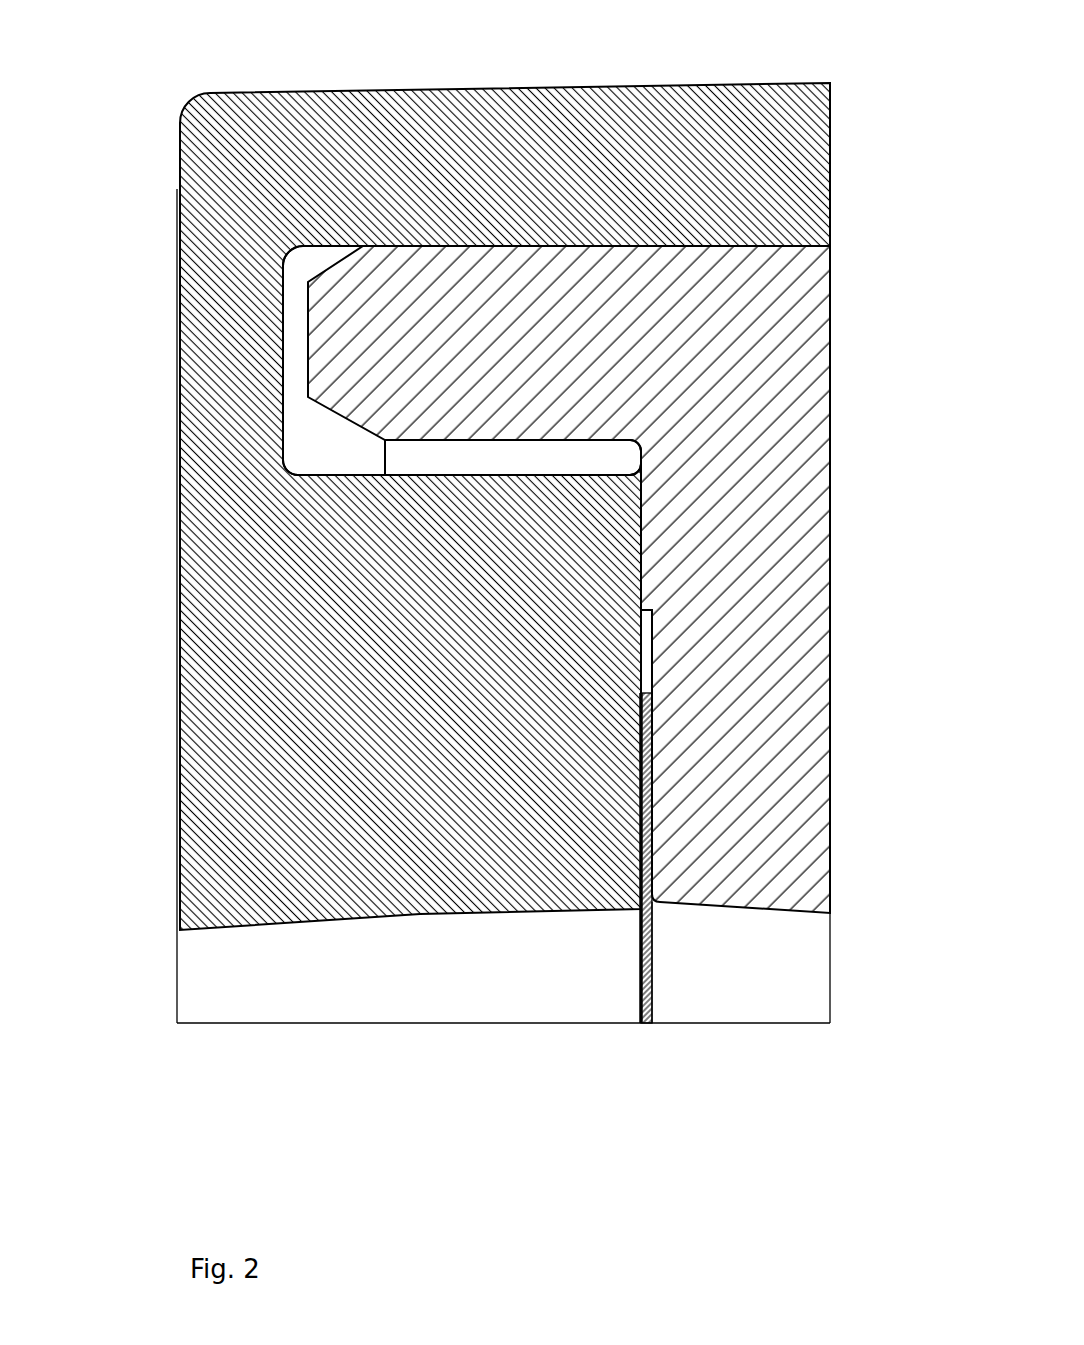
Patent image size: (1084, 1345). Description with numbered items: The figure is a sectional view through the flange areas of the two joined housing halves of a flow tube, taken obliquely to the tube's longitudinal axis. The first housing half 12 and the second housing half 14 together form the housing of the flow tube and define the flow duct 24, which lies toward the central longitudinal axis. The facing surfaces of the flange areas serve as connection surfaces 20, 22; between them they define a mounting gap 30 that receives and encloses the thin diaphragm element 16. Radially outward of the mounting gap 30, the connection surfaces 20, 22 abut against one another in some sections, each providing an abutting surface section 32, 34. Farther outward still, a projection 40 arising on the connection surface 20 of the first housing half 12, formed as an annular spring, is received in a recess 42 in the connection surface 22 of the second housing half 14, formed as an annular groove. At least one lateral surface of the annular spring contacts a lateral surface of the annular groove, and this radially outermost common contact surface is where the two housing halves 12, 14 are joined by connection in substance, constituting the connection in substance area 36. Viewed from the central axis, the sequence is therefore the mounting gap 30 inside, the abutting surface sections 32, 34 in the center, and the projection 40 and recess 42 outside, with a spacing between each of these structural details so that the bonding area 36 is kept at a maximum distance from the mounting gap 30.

The first housing half 12 is at (175, 803).
The second housing half 14 is at (832, 727).
The diaphragm element 16 is at (638, 940).
The connection surface 20 is at (653, 630).
The connection surface 22 is at (640, 635).
The flow duct 24 is at (248, 978).
The mounting gap 30 is at (645, 662).
The abutting surface section 32 is at (635, 557).
The abutting surface section 34 is at (641, 520).
The connection in substance area 36 is at (507, 240).
The projection 40 is at (307, 322).
The recess 42 is at (290, 345).